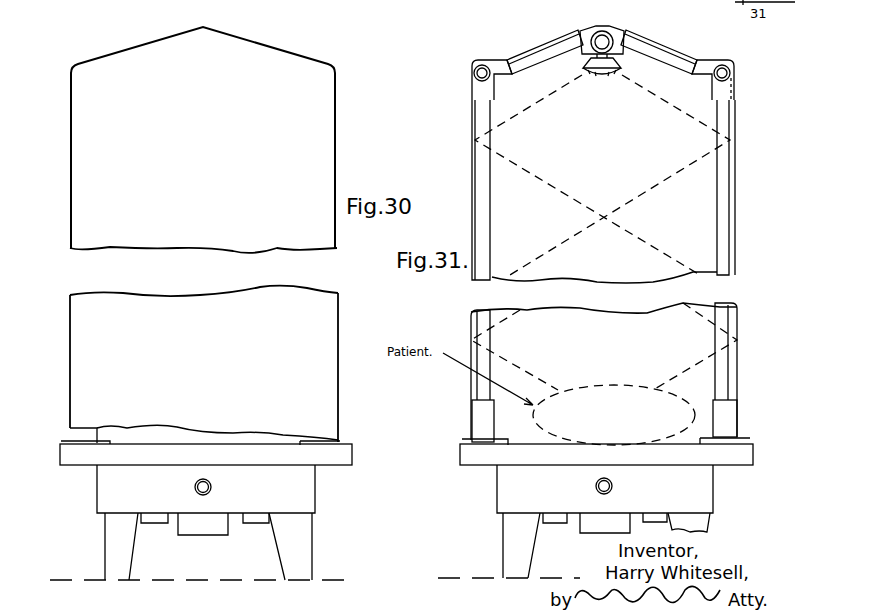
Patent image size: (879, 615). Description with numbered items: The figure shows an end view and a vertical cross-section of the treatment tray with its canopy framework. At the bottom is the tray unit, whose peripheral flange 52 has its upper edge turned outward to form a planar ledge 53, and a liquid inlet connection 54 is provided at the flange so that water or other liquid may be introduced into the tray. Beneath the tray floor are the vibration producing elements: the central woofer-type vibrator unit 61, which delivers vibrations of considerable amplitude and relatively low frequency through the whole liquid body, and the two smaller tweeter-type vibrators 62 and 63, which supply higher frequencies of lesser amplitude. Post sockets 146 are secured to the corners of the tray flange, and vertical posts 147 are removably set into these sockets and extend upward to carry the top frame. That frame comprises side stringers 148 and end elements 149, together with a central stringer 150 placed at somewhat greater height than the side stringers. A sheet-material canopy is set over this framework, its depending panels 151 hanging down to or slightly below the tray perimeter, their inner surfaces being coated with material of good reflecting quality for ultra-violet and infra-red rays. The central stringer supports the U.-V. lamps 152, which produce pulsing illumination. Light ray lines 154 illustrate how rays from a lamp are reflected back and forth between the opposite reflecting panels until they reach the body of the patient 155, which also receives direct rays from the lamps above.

In FIG. 30, the peripheral flange 52 is at (143, 493).
In FIG. 31, the peripheral flange 52 is at (527, 493).
In FIG. 30, the ledge 53 is at (327, 451).
In FIG. 31, the ledge 53 is at (693, 455).
In FIG. 30, the liquid inlet connection 54 is at (212, 487).
In FIG. 31, the liquid inlet connection 54 is at (613, 485).
In FIG. 30, the vibrator unit 61 is at (204, 523).
In FIG. 31, the vibrator unit 61 is at (608, 520).
In FIG. 30, the vibrator 62 is at (260, 520).
In FIG. 30, the vibrator 63 is at (157, 527).
In FIG. 31, the vibrator 63 is at (553, 520).
In FIG. 30, the post socket 146 is at (82, 437).
In FIG. 31, the post socket 146 is at (487, 423).
In FIG. 31, the vertical post 147 is at (482, 243).
In FIG. 31, the side stringer 148 is at (472, 68).
In FIG. 31, the end element 149 is at (552, 52).
In FIG. 31, the central stringer 150 is at (603, 32).
In FIG. 30, the depending panel 151 is at (204, 234).
In FIG. 31, the depending panel 151 is at (472, 165).
In FIG. 31, the U.-V. lamp 152 is at (602, 76).
In FIG. 31, the light ray line 154 is at (660, 182).
In FIG. 31, the patient's body 155 is at (593, 383).